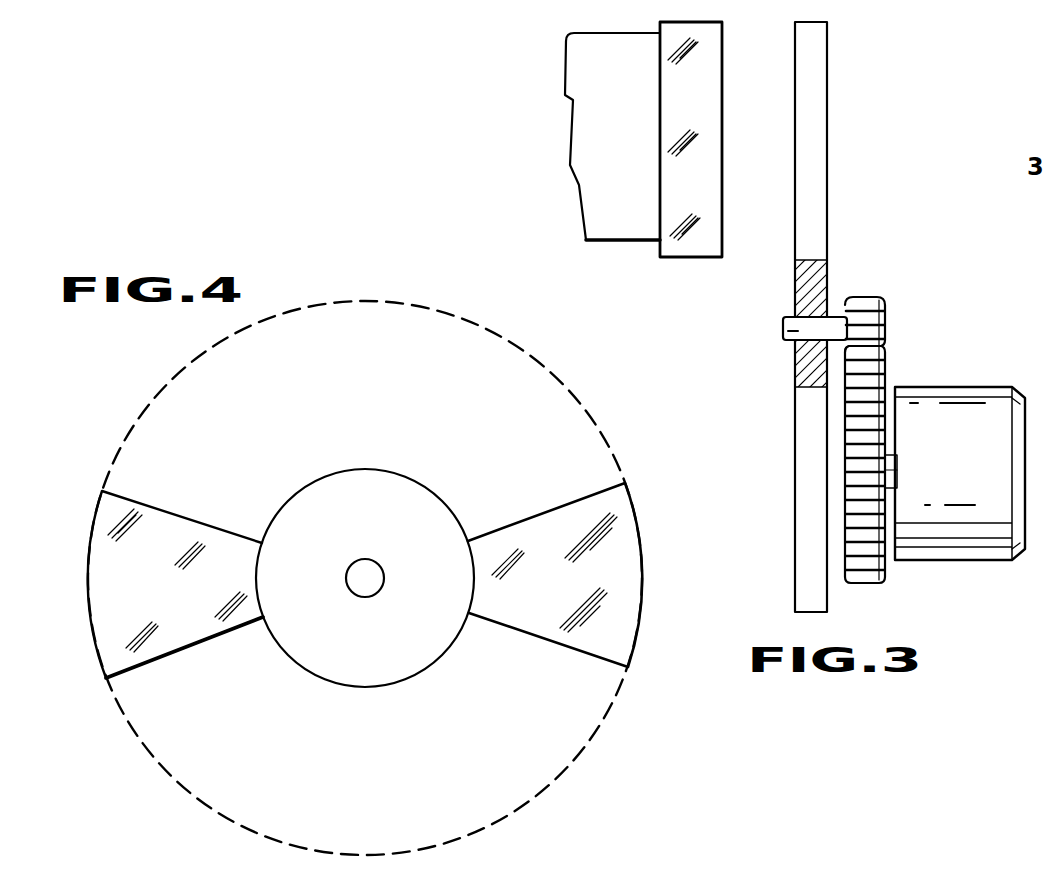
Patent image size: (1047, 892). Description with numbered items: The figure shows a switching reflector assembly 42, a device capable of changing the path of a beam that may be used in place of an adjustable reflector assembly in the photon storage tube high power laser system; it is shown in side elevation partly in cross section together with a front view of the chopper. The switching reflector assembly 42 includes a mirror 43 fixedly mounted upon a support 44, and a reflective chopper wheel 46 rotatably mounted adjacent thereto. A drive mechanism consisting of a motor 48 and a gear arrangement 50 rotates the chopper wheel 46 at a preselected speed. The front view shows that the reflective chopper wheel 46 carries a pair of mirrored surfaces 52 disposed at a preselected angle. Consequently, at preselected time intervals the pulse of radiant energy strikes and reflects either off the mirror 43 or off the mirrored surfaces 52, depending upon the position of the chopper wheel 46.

In FIG. 3, the switching reflector assembly 42 is at (773, 455).
In FIG. 3, the mirror 43 is at (675, 257).
In FIG. 3, the support 44 is at (576, 128).
In FIG. 3, the reflective chopper wheel 46 is at (786, 280).
In FIG. 4, the reflective chopper wheel 46 is at (484, 417).
In FIG. 3, the motor 48 is at (958, 560).
In FIG. 3, the gear arrangement 50 is at (902, 347).
In FIG. 4, the mirrored surfaces 52 is at (104, 600).